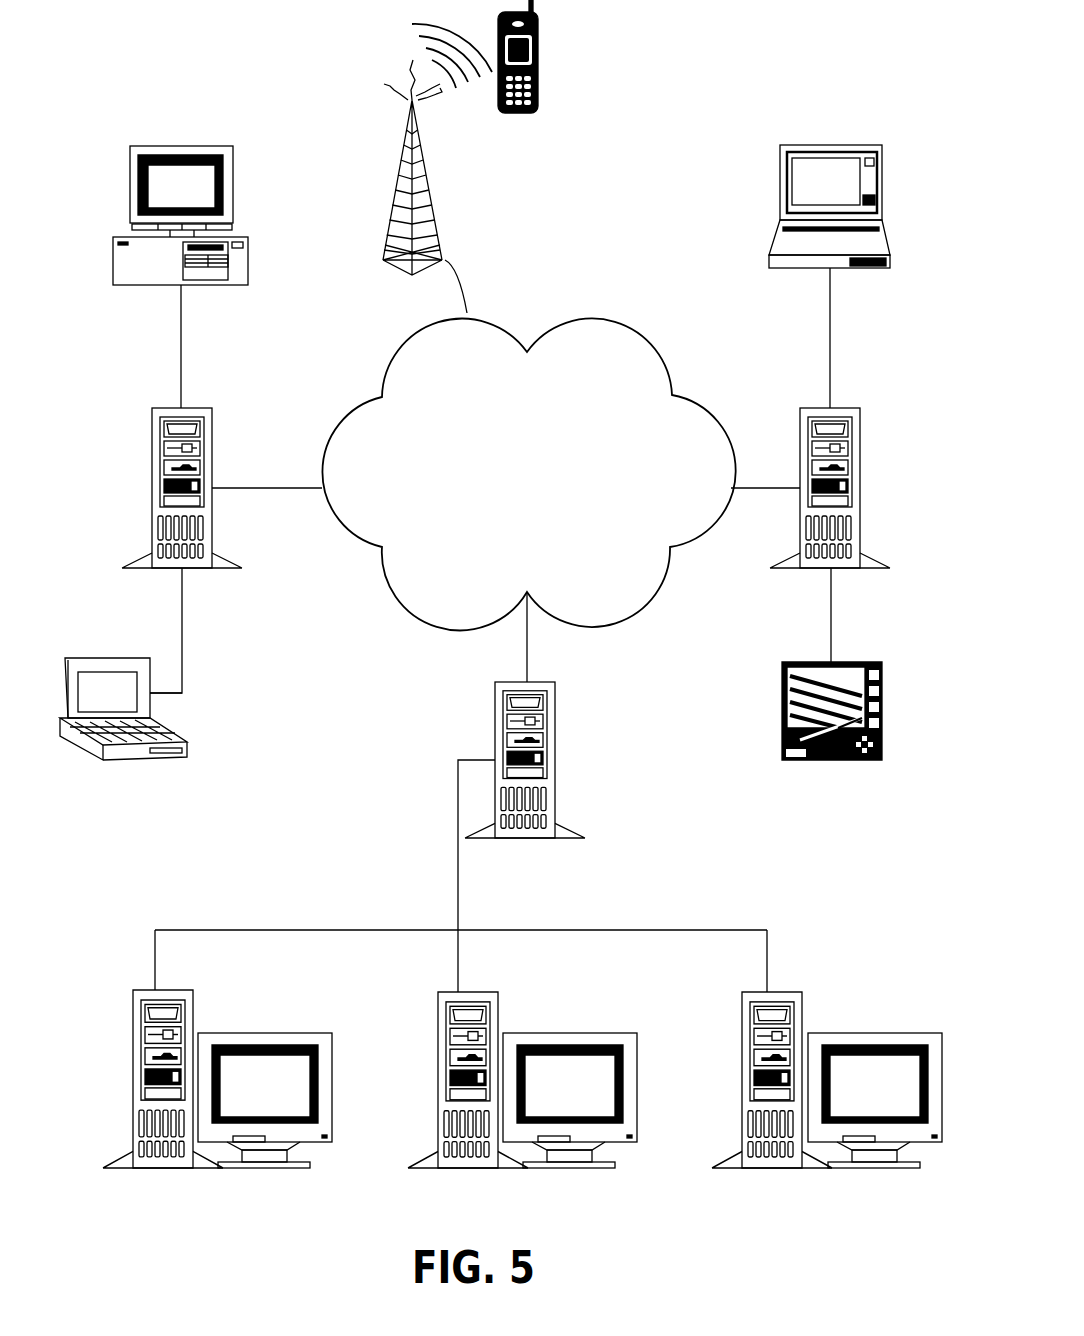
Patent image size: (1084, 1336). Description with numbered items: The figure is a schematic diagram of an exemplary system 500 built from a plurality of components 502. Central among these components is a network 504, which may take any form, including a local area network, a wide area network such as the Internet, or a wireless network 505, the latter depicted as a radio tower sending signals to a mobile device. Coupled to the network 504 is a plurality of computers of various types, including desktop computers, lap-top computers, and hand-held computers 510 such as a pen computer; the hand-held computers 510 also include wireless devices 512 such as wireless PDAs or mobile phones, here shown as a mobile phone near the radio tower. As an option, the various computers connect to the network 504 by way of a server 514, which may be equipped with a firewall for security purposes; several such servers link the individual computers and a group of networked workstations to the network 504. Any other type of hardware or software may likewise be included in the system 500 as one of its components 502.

The system 500 is at (763, 89).
The components 502 is at (358, 812).
The network 504 is at (580, 312).
The wireless network 505 is at (400, 162).
The hand-held computers 510 is at (782, 708).
The wireless devices 512 is at (538, 37).
The server 514 is at (557, 760).